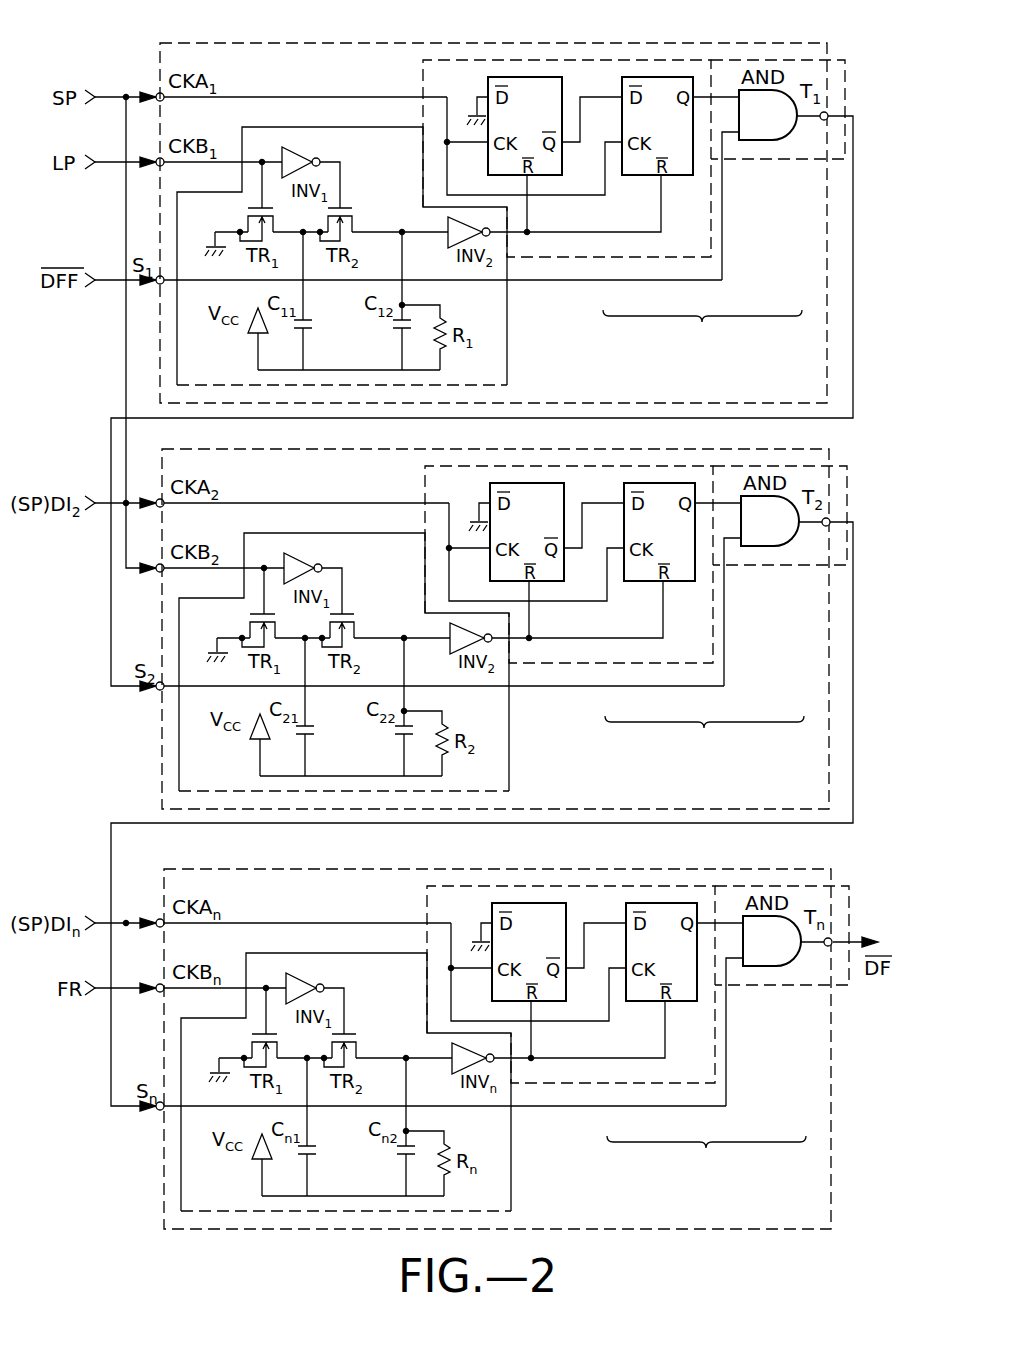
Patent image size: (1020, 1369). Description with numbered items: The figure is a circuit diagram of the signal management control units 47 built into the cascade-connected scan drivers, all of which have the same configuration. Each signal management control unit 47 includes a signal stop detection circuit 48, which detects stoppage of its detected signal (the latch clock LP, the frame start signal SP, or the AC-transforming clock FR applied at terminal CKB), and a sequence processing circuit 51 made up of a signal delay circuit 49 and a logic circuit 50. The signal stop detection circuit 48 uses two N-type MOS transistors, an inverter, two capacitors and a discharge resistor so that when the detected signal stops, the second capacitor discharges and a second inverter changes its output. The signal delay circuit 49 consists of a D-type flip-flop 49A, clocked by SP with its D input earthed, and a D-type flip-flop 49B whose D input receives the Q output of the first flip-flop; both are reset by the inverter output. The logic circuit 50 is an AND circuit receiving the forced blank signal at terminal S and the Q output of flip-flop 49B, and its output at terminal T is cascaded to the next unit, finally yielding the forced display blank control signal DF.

The signal management control unit 47 is at (795, 403).
The signal stop detection circuit 48 is at (507, 350).
The signal delay circuit 49 is at (617, 257).
The D-type flip-flop 49A is at (517, 77).
The D-type flip-flop 49B is at (651, 77).
The logic circuit 50 is at (768, 159).
The sequence processing circuit 51 is at (704, 748).